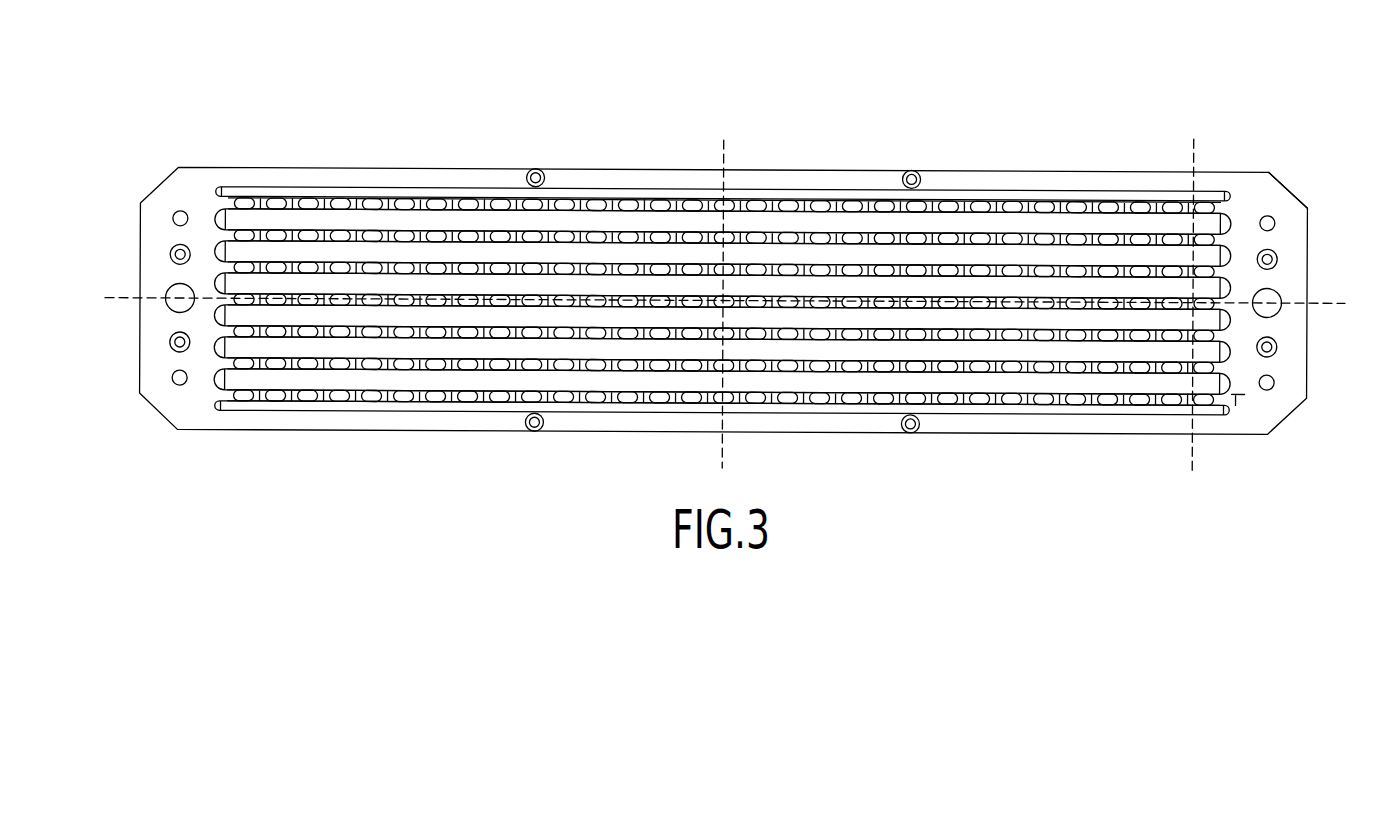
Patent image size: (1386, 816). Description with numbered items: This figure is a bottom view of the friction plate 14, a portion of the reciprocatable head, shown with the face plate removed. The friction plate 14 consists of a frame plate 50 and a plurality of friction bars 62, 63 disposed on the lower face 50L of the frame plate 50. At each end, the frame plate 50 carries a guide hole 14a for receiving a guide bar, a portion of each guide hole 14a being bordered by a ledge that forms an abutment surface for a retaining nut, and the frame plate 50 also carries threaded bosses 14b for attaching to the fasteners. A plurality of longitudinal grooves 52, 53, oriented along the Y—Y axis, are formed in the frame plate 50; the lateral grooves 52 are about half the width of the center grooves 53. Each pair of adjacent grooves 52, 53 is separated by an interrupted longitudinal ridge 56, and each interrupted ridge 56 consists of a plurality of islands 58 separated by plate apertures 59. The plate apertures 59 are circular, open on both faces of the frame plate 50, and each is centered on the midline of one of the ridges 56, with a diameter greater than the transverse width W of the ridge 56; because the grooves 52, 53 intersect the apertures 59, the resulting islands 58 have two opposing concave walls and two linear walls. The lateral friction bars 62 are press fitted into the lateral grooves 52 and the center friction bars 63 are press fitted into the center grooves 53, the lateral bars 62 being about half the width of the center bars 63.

The friction plate 14 is at (456, 118).
The guide holes 14a is at (1278, 290).
The threaded bosses 14b is at (1275, 218).
The frame plate 50 is at (605, 169).
The lower face 50L is at (1268, 171).
The lateral grooves 52 is at (823, 188).
The center grooves 53 is at (973, 211).
The interrupted longitudinal ridge 56 is at (1067, 205).
The islands 58 is at (600, 362).
The plate apertures 59 is at (615, 362).
The lateral friction bars 62 is at (348, 194).
The center friction bars 63 is at (277, 254).
The transverse width W is at (1245, 395).